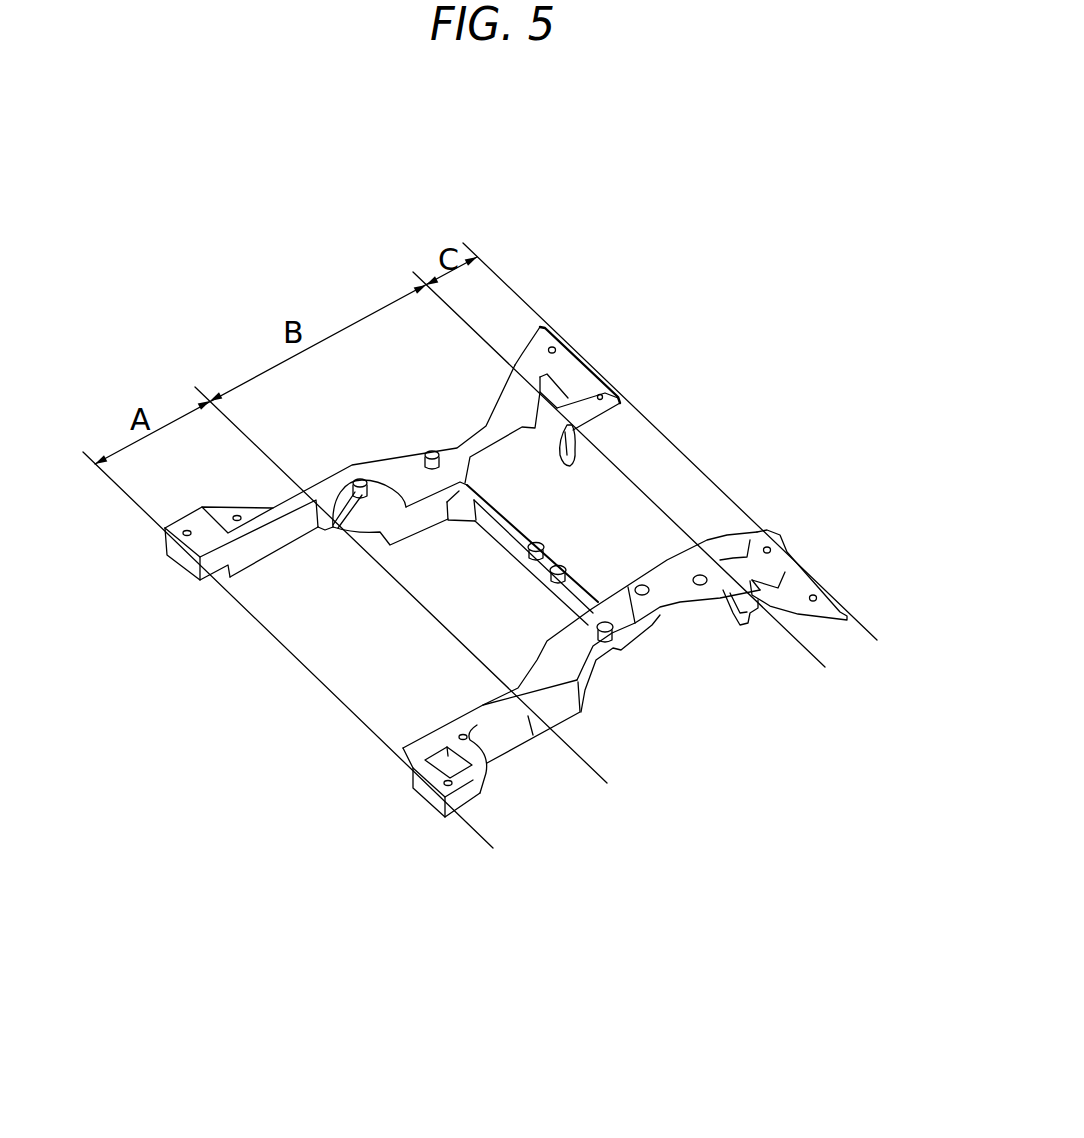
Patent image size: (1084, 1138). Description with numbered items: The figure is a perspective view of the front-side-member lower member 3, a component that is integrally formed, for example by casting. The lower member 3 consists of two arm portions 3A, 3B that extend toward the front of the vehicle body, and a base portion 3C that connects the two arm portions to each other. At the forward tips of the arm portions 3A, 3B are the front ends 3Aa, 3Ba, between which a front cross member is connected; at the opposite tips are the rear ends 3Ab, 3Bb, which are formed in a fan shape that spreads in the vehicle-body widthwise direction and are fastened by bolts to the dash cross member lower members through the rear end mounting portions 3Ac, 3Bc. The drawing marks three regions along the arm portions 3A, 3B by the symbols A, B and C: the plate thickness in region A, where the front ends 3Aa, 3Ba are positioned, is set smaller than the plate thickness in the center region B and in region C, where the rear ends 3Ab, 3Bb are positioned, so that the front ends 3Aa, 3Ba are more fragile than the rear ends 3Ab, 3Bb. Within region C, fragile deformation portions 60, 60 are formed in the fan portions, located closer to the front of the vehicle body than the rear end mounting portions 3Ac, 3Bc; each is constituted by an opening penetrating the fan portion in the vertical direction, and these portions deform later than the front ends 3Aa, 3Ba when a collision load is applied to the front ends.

The front-side-member lower member 3 is at (498, 560).
The arm portion 3A is at (395, 474).
The front end 3Aa is at (200, 537).
The rear end 3Ab is at (570, 403).
The rear end mounting portion 3Ac is at (570, 366).
The arm portion 3B is at (614, 618).
The front end 3Ba is at (440, 767).
The rear end 3Bb is at (720, 582).
The rear end mounting portion 3Bc is at (788, 577).
The base portion 3C is at (555, 553).
The fragile deformation portion 60 is at (575, 412).